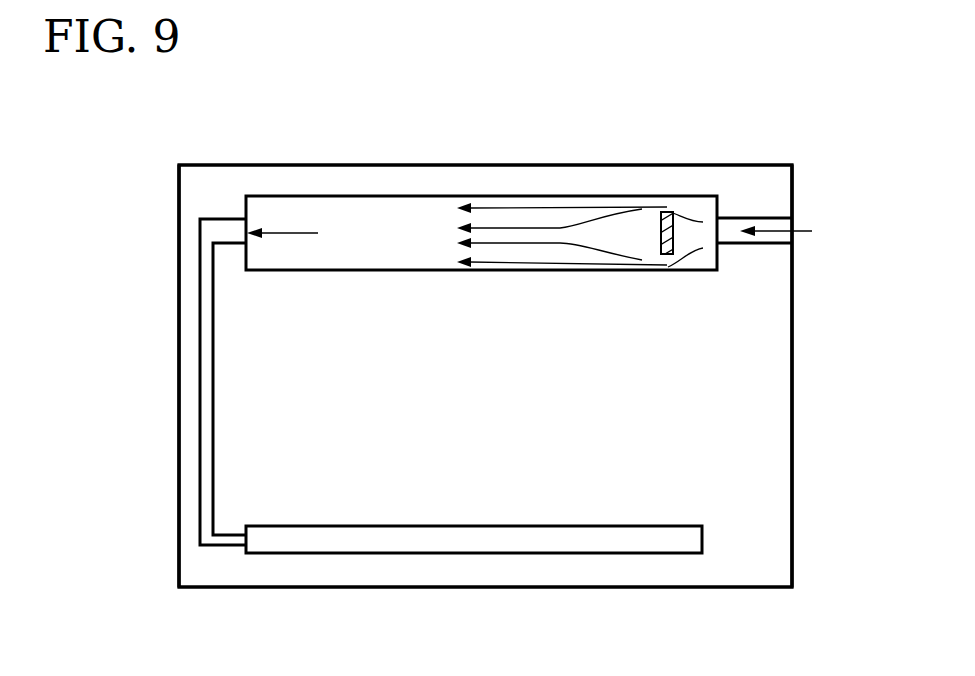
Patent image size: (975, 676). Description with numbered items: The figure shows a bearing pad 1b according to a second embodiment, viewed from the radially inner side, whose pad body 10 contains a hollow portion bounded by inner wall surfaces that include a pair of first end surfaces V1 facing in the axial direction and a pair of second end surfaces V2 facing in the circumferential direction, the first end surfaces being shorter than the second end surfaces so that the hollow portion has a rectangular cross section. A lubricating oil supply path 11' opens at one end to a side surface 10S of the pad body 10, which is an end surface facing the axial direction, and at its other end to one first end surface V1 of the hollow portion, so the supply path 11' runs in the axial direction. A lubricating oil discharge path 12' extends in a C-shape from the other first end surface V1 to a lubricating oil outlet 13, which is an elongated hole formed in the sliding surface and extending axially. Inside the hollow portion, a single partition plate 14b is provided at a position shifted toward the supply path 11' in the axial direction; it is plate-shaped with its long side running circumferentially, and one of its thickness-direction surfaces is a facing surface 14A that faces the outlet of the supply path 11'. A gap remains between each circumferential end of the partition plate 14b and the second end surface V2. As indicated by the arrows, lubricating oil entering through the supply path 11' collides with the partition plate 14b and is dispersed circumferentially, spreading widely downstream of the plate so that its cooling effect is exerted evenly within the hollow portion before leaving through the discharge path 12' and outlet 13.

The bearing pad 1b is at (133, 156).
The pad body 10 is at (770, 465).
The side surface 10S is at (178, 245).
The first end surface V1 is at (247, 199).
The second end surface V2 is at (427, 197).
The partition plate 14b is at (667, 212).
The facing surface 14A is at (672, 232).
The lubricating oil supply path 11' is at (800, 198).
The lubricating oil discharge path 12' is at (161, 382).
The lubricating oil outlet 13 is at (412, 538).